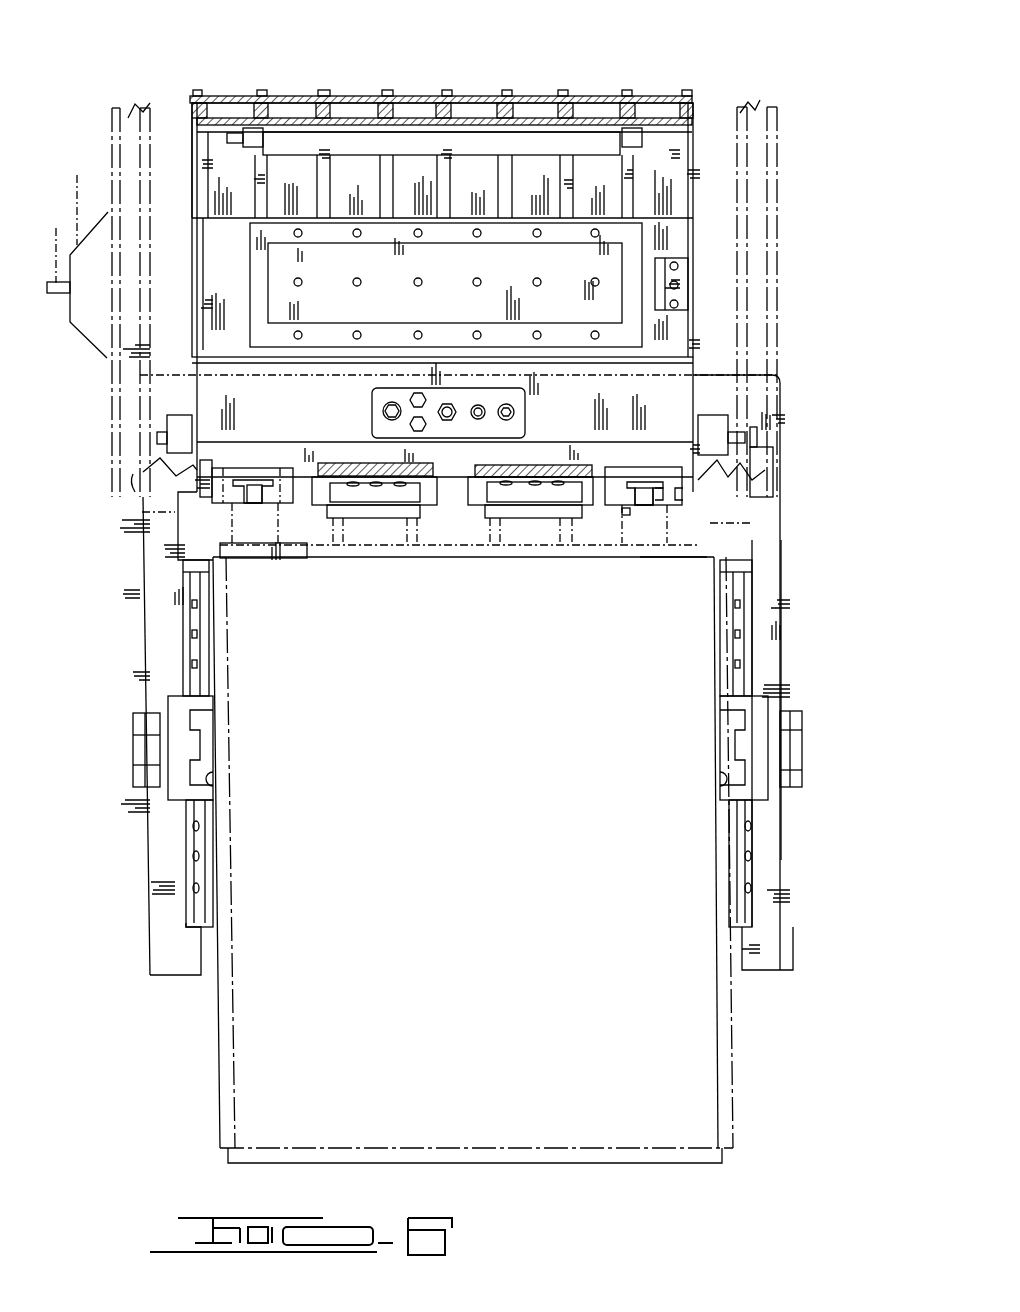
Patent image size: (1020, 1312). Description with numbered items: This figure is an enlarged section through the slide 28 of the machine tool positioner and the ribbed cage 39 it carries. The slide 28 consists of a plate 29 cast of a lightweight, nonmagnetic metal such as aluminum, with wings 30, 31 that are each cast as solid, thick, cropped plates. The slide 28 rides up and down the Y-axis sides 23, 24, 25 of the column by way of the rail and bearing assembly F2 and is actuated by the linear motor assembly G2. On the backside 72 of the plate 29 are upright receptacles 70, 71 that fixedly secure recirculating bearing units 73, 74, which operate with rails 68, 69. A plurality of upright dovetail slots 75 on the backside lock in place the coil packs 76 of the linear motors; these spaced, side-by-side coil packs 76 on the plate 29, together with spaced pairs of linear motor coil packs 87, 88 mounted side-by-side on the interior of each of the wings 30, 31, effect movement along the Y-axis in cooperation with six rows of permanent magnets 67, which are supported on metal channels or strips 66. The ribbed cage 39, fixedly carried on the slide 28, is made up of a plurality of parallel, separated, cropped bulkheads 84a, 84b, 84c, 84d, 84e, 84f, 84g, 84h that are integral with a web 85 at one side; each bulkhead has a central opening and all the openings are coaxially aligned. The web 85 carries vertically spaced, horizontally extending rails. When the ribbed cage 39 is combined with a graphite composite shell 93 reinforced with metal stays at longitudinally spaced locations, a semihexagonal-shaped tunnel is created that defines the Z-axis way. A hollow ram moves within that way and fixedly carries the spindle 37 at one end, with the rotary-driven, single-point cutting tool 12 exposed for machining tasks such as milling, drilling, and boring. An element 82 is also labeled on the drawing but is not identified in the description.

The single-point cutting tool 12 is at (57, 228).
The Y-axis side of the column 23 is at (555, 545).
The Y-axis side of the column 24 is at (727, 778).
The Y-axis side of the column 25 is at (209, 778).
The slide 28 is at (676, 437).
The plate 29 is at (683, 458).
The wing 30 is at (147, 642).
The wing 31 is at (770, 653).
The spindle 37 is at (78, 175).
The cage 39 is at (703, 118).
The metal channels or strips 66 is at (443, 547).
The permanent magnets 67 is at (395, 517).
The rail 68 is at (750, 523).
The rail 69 is at (262, 518).
The upright receptacle 70 is at (255, 492).
The upright receptacle 71 is at (752, 490).
The backside of plate 72 is at (604, 490).
The recirculating bearing unit 73 is at (235, 492).
The recirculating bearing unit 74 is at (632, 505).
The dovetail slot 75 is at (477, 462).
The coil pack 76 is at (500, 485).
The side wall 82 is at (793, 864).
The bulkhead 84a is at (200, 150).
The bulkhead 84b is at (253, 175).
The bulkhead 84c is at (313, 165).
The bulkhead 84d is at (383, 178).
The bulkhead 84e is at (448, 175).
The bulkhead 84f is at (507, 173).
The bulkhead 84g is at (567, 173).
The bulkhead 84h is at (623, 175).
The web 85 is at (567, 358).
The linear motor coil pack 87 is at (192, 880).
The linear motor coil pack 88 is at (739, 648).
The graphite composite shell 93 is at (473, 93).
The rail and bearing assembly F2 is at (245, 510).
The linear motor assembly G2 is at (440, 487).